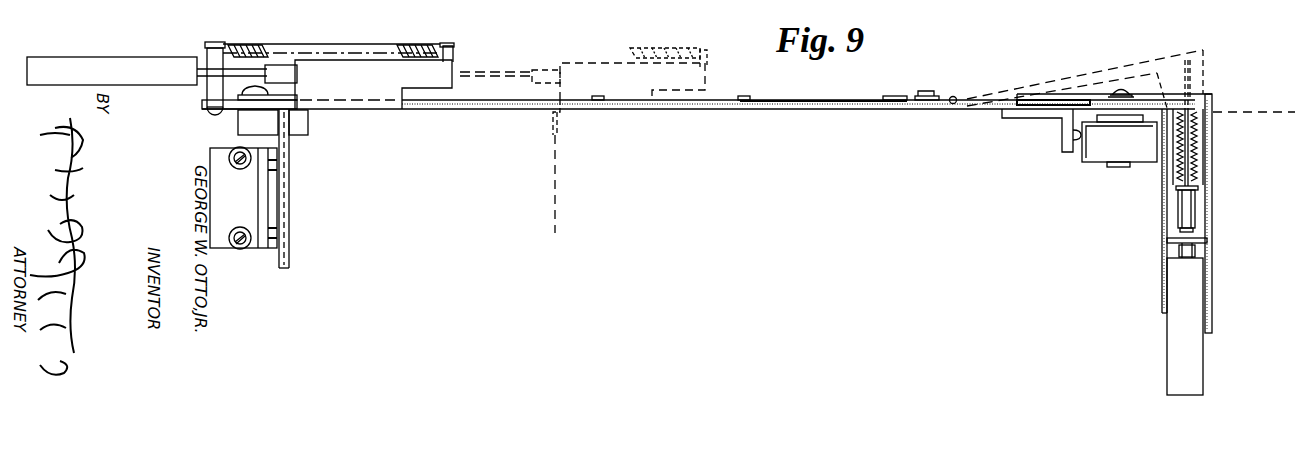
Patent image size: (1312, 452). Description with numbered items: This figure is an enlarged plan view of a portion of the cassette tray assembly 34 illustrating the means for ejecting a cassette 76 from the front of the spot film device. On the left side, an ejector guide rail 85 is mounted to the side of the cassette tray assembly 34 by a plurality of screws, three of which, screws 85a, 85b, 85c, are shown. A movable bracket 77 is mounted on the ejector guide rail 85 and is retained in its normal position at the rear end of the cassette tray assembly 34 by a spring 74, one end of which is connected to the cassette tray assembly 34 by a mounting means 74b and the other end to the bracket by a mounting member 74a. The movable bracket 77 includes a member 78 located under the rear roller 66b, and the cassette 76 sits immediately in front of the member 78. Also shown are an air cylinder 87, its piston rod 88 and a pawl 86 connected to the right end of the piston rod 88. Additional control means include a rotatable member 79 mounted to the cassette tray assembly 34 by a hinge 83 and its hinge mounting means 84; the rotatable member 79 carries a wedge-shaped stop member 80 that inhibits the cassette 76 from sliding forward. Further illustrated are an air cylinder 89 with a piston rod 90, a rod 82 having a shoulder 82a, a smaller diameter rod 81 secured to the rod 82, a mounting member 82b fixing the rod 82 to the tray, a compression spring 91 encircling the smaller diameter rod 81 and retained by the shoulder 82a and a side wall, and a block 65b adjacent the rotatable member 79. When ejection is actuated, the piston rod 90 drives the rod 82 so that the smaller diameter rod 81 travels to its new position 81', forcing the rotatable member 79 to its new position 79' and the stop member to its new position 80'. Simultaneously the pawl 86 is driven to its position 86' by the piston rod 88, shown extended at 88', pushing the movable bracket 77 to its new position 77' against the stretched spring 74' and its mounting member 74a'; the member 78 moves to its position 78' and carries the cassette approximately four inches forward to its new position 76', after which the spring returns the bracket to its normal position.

The air cylinder 87 is at (112, 57).
The mounting means 74b is at (208, 55).
The piston rod 88 is at (248, 30).
The pawl 86 is at (275, 52).
The spring 74 is at (332, 36).
The mounting member 74a is at (471, 45).
The movable bracket 77 is at (373, 84).
The cassette 76 is at (698, 206).
The rear roller 66b is at (240, 125).
The member 78 is at (309, 137).
The cassette tray assembly 34 is at (279, 255).
The piston rod (extended position) 88' is at (497, 57).
The pawl (new position) 86' is at (553, 59).
The movable bracket (new position) 77' is at (632, 81).
The member (new position) 78' is at (536, 132).
The cassette (new position) 76' is at (925, 172).
The spring (extended position) 74' is at (667, 37).
The mounting member (new position) 74a' is at (729, 50).
The ejector guide rail 85 is at (840, 99).
The screw 85a is at (600, 109).
The screw 85b is at (748, 109).
The screw 85c is at (885, 110).
The hinge mounting means 84 is at (927, 95).
The hinge 83 is at (953, 96).
The rotatable member 79 is at (1107, 126).
The rotatable member (new position) 79' is at (1085, 73).
The wedge-shaped stop member 80 is at (1154, 155).
The wedge-shaped stop member (new position) 80' is at (1216, 84).
The smaller diameter rod 81 is at (1156, 176).
The smaller diameter rod (new position) 81' is at (1223, 83).
The compression spring 91 is at (1200, 150).
The drive block 65b is at (1103, 165).
The rod 82 is at (1195, 205).
The shoulder 82a is at (1200, 190).
The mounting member 82b is at (1207, 243).
The piston rod 90 is at (1177, 250).
The air cylinder 89 is at (1167, 362).